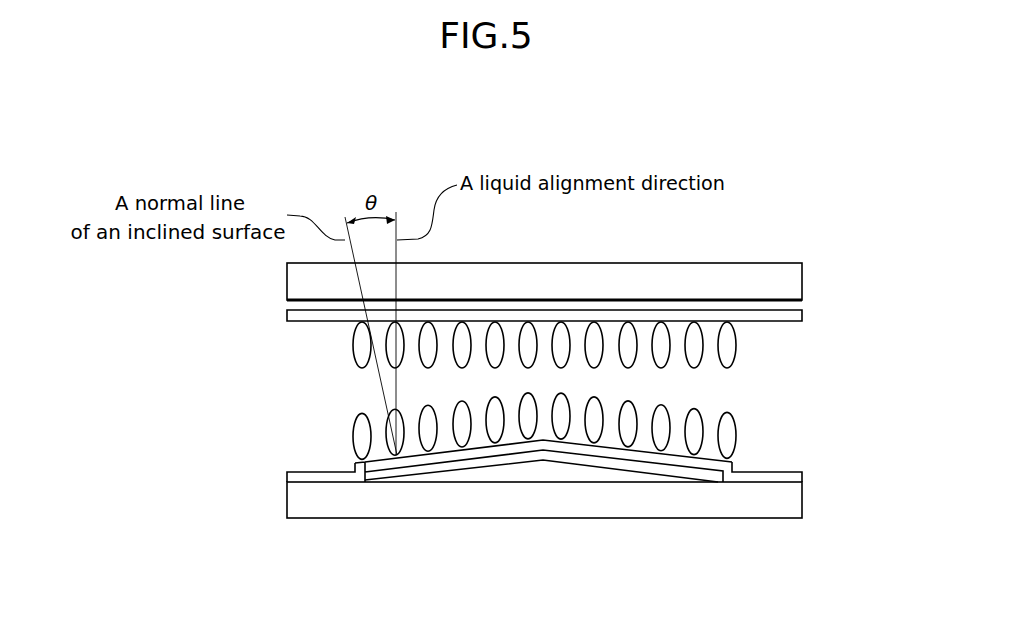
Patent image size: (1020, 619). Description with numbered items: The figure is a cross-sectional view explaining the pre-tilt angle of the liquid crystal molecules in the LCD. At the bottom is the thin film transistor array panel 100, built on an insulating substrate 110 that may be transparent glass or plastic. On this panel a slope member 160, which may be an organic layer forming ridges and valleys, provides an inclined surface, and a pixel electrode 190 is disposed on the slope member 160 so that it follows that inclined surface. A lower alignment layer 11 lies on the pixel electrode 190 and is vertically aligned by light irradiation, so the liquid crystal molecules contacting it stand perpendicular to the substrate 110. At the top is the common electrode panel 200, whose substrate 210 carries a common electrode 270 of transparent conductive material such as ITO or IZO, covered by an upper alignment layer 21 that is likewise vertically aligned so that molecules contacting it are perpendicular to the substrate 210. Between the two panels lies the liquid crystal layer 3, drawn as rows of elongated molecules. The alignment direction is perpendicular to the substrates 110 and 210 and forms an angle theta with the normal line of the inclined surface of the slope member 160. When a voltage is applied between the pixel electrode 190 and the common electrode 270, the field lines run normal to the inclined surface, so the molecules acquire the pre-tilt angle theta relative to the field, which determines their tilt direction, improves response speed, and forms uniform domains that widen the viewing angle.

The common electrode panel 200 is at (573, 296).
The substrate 210 is at (705, 278).
The common electrode 270 is at (610, 305).
The upper alignment layer 21 is at (777, 316).
The liquid crystal layer 3 is at (808, 327).
The thin film transistor array panel 100 is at (571, 505).
The insulating substrate 110 is at (623, 500).
The lower alignment layer 11 is at (767, 477).
The pixel electrode 190 is at (487, 462).
The slope member 160 is at (545, 472).